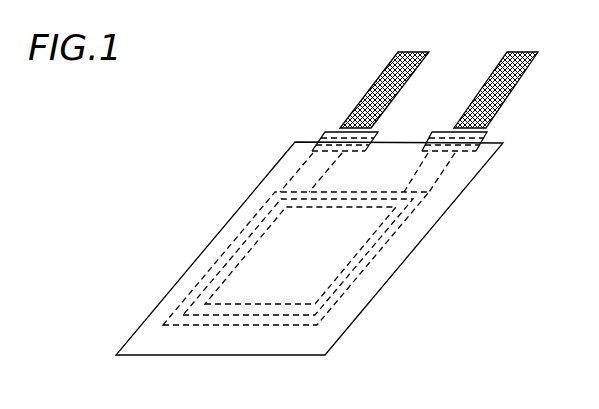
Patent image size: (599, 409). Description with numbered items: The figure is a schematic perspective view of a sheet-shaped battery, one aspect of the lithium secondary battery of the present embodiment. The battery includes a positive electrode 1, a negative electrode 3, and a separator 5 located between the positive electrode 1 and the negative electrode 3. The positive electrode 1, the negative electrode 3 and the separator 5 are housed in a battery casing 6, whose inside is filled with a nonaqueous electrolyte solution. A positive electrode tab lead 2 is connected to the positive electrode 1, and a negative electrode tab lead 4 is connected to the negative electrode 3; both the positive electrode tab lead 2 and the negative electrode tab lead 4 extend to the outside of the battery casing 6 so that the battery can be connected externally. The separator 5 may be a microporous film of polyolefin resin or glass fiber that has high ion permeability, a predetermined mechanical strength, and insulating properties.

The positive electrode 1 is at (330, 218).
The positive electrode tab lead 2 is at (313, 153).
The negative electrode 3 is at (408, 217).
The negative electrode tab lead 4 is at (465, 143).
The separator 5 is at (318, 318).
The battery casing 6 is at (377, 273).